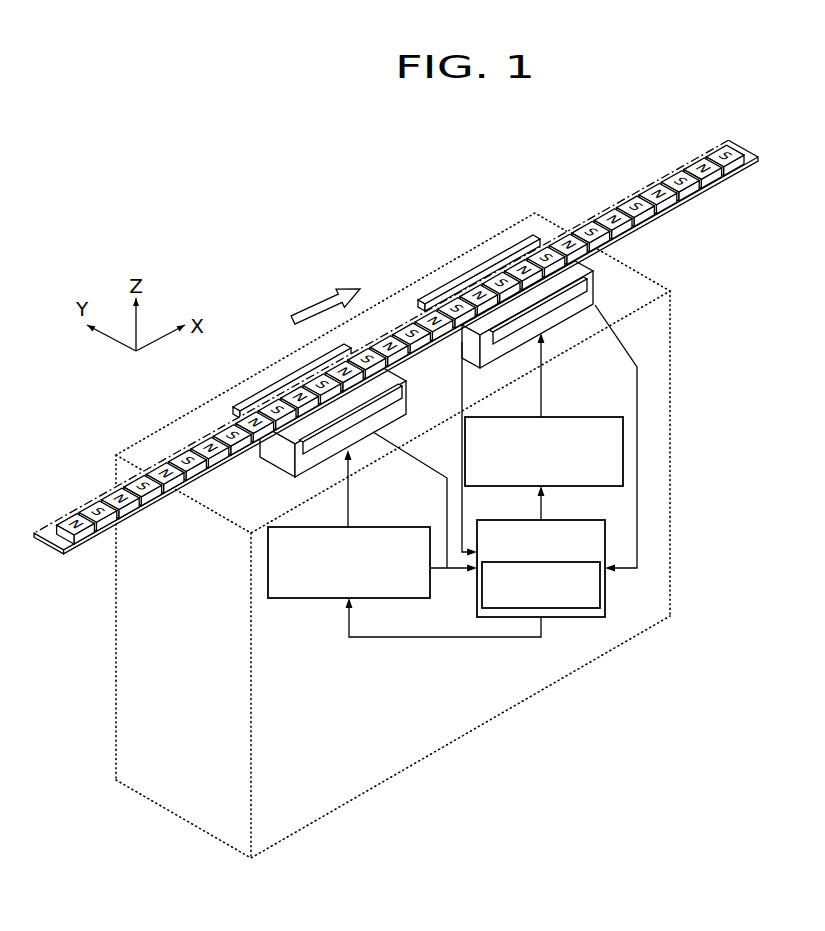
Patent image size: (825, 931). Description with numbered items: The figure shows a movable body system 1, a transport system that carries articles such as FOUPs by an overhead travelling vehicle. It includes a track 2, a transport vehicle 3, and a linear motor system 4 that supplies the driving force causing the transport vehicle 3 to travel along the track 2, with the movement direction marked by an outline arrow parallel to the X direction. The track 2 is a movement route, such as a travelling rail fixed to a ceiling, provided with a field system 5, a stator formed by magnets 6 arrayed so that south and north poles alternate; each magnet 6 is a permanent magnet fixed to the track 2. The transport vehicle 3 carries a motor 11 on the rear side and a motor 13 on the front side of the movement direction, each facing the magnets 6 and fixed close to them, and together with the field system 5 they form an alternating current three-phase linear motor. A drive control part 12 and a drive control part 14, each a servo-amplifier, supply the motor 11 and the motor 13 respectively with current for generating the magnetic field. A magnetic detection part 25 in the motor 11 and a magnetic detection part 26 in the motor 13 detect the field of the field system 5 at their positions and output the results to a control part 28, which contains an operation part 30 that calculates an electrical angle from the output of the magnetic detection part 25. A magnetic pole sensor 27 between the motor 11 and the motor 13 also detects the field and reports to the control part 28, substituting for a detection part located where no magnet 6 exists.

The movable body system 1 is at (218, 119).
The track 2 is at (411, 318).
The transport vehicle 3 is at (674, 431).
The linear motor system 4 is at (368, 280).
The field system 5 is at (461, 262).
The magnet 6 is at (487, 184).
The motor 11 is at (352, 425).
The drive control part 12 is at (404, 527).
The motor 13 is at (552, 331).
The drive control part 14 is at (587, 417).
The magnetic detection part 25 is at (338, 424).
The magnetic detection part 26 is at (568, 300).
The magnetic pole sensor 27 is at (528, 314).
The control part 28 is at (568, 588).
The operation part 30 is at (552, 612).